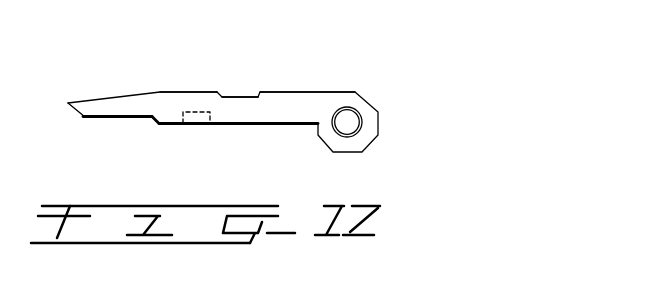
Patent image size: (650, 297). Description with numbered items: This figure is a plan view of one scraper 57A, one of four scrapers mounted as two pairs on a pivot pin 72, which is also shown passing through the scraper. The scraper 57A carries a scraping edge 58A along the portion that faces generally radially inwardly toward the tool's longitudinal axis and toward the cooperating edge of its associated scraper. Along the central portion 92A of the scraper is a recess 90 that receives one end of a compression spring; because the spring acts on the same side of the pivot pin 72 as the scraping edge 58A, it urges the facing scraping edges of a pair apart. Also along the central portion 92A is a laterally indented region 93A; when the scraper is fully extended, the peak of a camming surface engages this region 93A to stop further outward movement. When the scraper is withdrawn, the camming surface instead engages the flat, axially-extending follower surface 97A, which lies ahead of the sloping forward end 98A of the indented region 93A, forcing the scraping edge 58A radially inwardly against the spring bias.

The follower surface 97A is at (205, 92).
The sloping forward end 98A is at (222, 92).
The laterally indented region 93A is at (267, 65).
The scraper 57A is at (290, 98).
The pivot pin 72 is at (352, 120).
The scraping edge 58A is at (86, 117).
The recess 90 is at (207, 125).
The central portion 92A is at (240, 124).